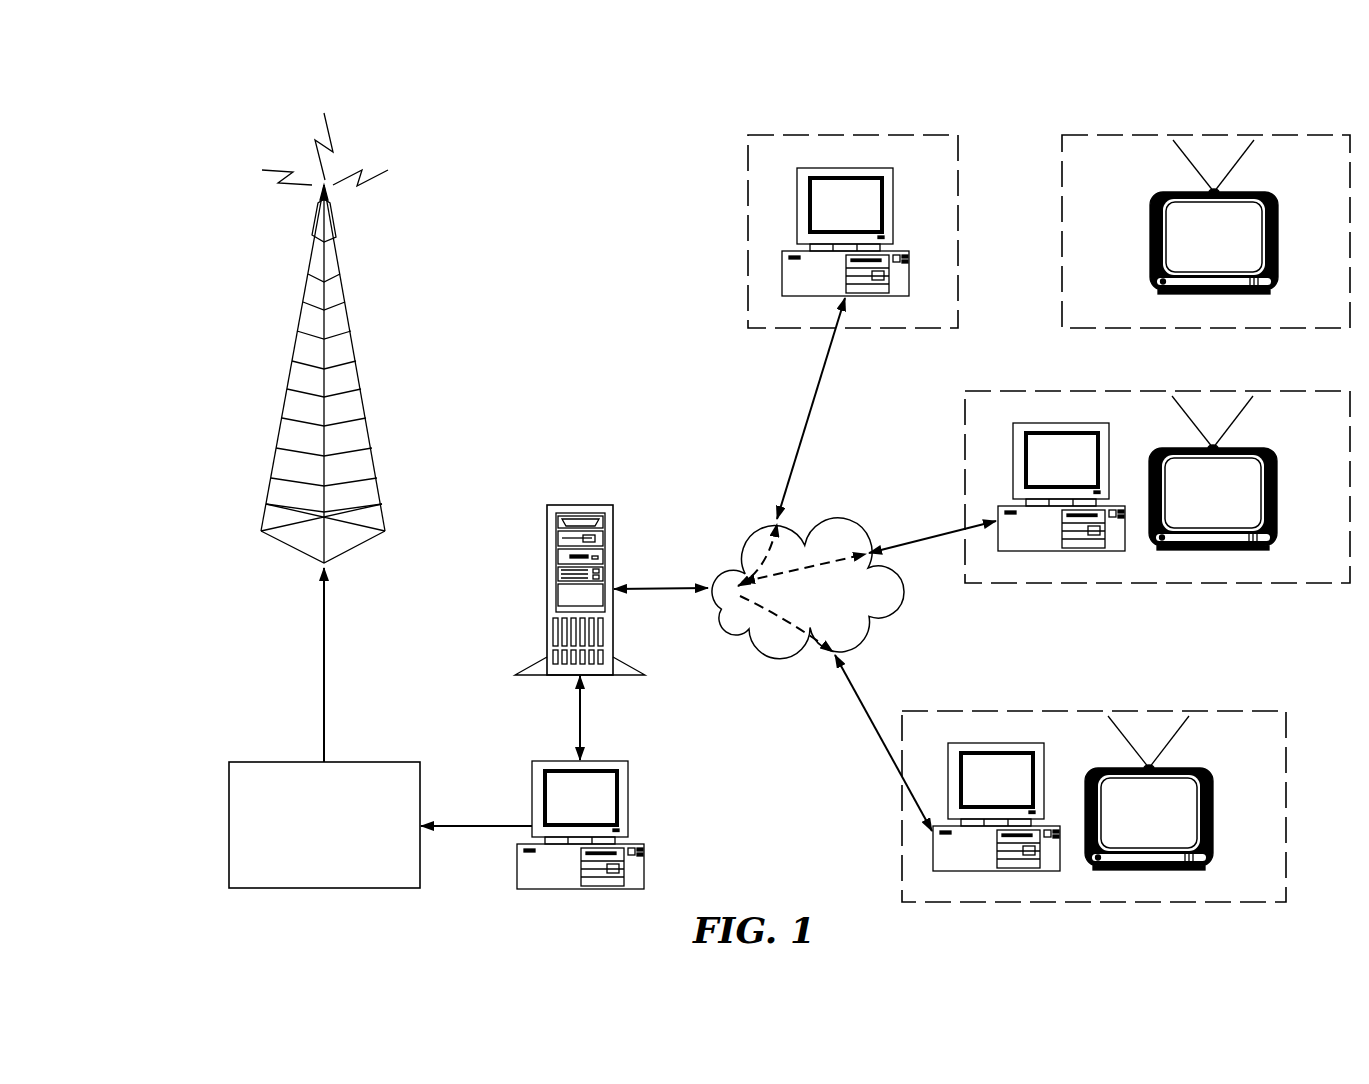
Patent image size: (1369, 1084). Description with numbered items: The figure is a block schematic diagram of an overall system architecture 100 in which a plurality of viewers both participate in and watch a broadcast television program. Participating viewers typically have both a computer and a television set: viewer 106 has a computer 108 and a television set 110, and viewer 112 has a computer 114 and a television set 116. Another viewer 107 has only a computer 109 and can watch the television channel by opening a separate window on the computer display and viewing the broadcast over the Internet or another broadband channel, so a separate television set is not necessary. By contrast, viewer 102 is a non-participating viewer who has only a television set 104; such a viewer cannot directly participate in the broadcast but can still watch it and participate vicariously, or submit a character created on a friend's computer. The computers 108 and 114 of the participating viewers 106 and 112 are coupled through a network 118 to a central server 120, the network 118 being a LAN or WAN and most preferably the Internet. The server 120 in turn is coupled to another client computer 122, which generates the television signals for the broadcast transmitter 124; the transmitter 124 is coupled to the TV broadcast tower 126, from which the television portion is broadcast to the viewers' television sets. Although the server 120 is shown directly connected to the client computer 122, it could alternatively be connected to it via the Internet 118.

The overall system architecture 100 is at (540, 263).
The viewer 102 is at (1077, 280).
The television set 104 is at (1190, 230).
The viewer 106 is at (1285, 407).
The viewer 107 is at (755, 278).
The computer 108 is at (1023, 468).
The computer 109 is at (810, 215).
The television set 110 is at (1190, 470).
The viewer 112 is at (1077, 727).
The computer 114 is at (980, 855).
The television set 116 is at (1157, 840).
The network 118 is at (770, 632).
The central server 120 is at (565, 598).
The client computer 122 is at (548, 870).
The broadcast transmitter 124 is at (220, 875).
The TV broadcast tower 126 is at (300, 408).